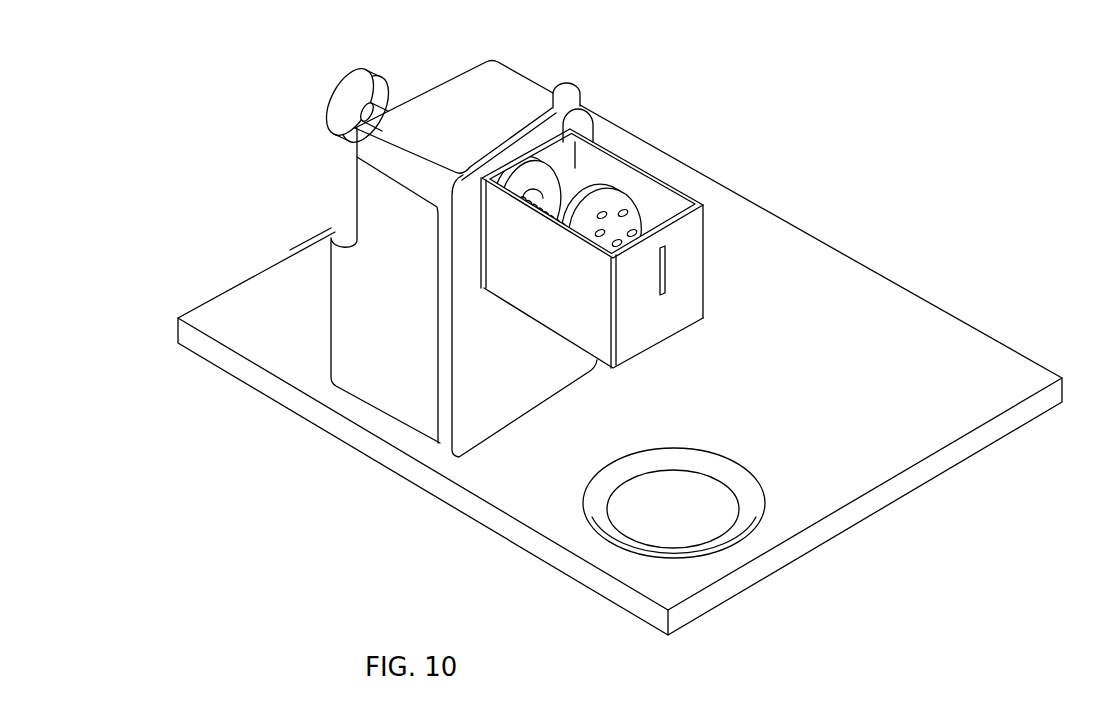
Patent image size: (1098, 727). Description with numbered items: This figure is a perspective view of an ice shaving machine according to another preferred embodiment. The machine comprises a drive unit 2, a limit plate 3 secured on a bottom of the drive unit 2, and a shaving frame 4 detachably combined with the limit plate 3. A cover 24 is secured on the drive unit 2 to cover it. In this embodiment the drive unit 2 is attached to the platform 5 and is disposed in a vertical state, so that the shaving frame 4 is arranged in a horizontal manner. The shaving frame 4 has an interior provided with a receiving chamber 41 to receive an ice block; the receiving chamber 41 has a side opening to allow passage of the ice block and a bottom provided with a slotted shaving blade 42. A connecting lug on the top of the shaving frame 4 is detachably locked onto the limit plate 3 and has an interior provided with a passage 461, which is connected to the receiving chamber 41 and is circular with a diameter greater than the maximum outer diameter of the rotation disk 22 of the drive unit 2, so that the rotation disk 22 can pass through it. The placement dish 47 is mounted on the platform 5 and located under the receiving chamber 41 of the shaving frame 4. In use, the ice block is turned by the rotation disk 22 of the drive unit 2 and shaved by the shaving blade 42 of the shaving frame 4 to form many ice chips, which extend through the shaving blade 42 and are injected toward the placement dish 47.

The drive unit 2 is at (443, 296).
The limit plate 3 is at (563, 102).
The shaving frame 4 is at (625, 230).
The platform 5 is at (860, 468).
The rotation disk 22 is at (616, 191).
The cover 24 is at (507, 82).
The receiving chamber 41 is at (677, 207).
The shaving blade 42 is at (668, 272).
The placement dish 47 is at (715, 518).
The passage 461 is at (597, 141).